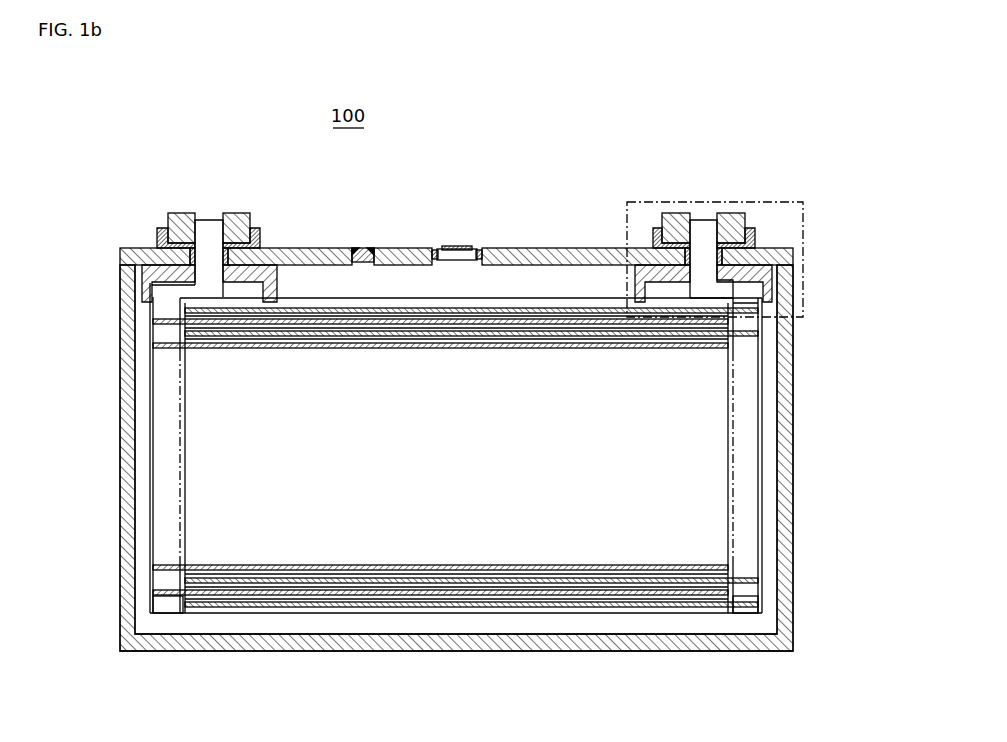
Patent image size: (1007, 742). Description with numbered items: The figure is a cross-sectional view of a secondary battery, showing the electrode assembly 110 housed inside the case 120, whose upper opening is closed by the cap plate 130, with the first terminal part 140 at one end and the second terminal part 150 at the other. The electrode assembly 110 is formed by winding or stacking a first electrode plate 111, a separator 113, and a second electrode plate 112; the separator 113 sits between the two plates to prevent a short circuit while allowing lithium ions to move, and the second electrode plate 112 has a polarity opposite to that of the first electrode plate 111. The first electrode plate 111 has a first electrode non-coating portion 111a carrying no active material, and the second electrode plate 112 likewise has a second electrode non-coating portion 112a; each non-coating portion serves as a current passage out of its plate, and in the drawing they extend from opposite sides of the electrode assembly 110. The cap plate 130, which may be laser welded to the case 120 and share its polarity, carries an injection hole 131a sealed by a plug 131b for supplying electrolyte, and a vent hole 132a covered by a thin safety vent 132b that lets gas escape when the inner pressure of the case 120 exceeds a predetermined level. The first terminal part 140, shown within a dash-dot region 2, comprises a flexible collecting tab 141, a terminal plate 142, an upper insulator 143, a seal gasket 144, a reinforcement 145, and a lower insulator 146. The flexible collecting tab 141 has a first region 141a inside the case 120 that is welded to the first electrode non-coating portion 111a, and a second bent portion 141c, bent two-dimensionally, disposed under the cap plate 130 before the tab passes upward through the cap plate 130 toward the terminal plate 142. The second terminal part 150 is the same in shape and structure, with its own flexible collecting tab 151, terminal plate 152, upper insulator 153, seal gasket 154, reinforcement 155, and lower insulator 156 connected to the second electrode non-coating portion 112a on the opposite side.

The terminal region 2 is at (806, 207).
The electrode assembly 110 is at (458, 502).
The first electrode plate 111 is at (617, 607).
The first electrode non-coating portion 111a is at (745, 613).
The second electrode plate 112 is at (250, 596).
The second electrode non-coating portion 112a is at (167, 596).
The separator 113 is at (363, 599).
The case 120 is at (535, 640).
The cap plate 130 is at (535, 247).
The injection hole 131a is at (366, 247).
The plug 131b is at (361, 248).
The vent hole 132a is at (473, 246).
The safety vent 132b is at (457, 248).
The first terminal part 140 is at (731, 233).
The flexible collecting tab 141 is at (803, 455).
The first region 141a is at (762, 420).
The second bent portion 141c is at (725, 318).
The terminal plate 142 is at (678, 216).
The upper insulator 143 is at (654, 235).
The seal gasket 144 is at (760, 247).
The reinforcement 145 is at (665, 282).
The lower insulator 146 is at (768, 287).
The second terminal part 150 is at (182, 226).
The flexible collecting tab 151 is at (148, 530).
The terminal plate 152 is at (237, 216).
The upper insulator 153 is at (261, 235).
The seal gasket 154 is at (168, 265).
The reinforcement 155 is at (250, 285).
The lower insulator 156 is at (140, 282).